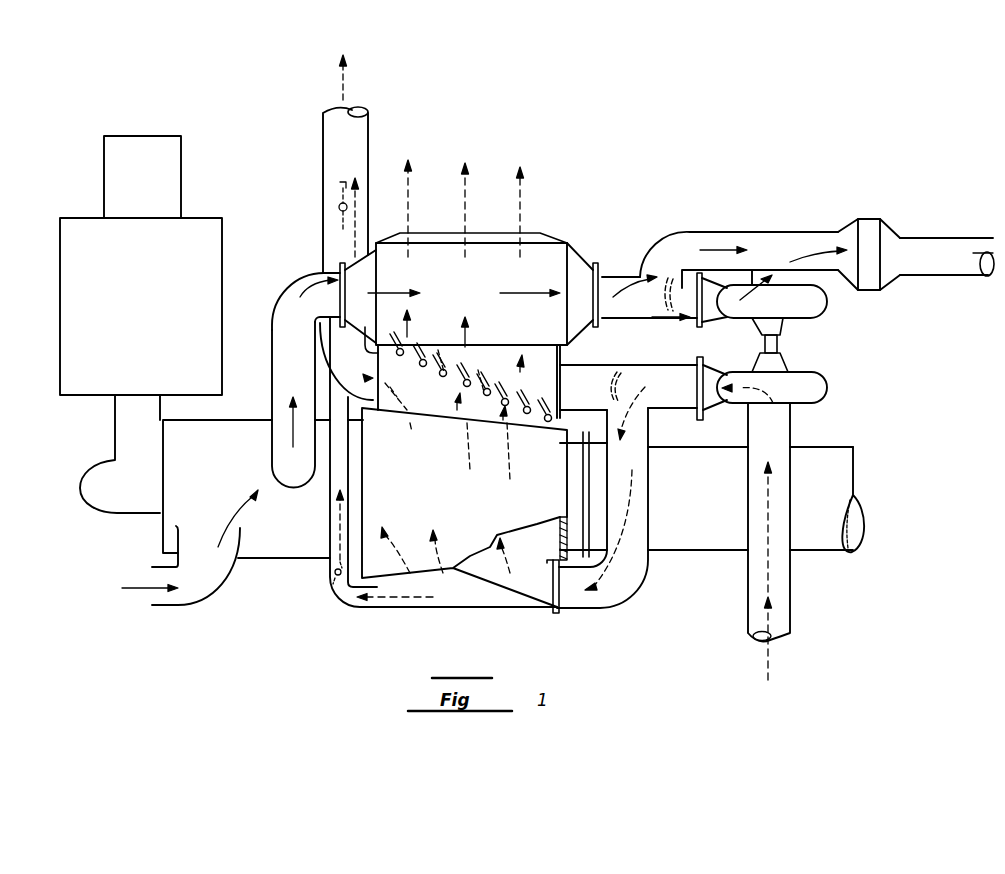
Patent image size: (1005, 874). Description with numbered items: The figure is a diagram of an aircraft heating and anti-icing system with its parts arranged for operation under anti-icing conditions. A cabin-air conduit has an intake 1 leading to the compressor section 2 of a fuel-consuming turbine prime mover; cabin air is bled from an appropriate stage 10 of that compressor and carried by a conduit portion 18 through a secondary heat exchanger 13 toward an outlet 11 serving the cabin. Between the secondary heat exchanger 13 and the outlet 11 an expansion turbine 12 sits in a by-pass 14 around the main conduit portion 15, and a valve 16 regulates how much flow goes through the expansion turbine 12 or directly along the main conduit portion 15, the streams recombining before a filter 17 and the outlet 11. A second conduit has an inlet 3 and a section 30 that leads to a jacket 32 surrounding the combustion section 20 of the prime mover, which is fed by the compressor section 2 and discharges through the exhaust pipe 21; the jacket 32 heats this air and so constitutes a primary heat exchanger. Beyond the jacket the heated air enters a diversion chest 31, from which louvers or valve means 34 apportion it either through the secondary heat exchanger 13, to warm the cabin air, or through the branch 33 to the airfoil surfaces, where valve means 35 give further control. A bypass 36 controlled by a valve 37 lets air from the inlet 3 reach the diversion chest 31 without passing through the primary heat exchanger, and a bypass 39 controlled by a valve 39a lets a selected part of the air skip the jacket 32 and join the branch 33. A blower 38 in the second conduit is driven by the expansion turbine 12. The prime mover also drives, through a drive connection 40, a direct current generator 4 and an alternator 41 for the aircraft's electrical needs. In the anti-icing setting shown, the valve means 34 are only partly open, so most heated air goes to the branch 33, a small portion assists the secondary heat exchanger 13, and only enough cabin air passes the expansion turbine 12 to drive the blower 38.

The intake 1 is at (152, 597).
The compressor section 2 is at (288, 552).
The inlet 3 is at (792, 612).
The direct current generator 4 is at (66, 360).
The bleed stage 10 is at (273, 453).
The outlet 11 is at (930, 240).
The expansion turbine 12 is at (823, 306).
The secondary heat exchanger 13 is at (481, 233).
The by-pass 14 is at (704, 318).
The main conduit portion 15 is at (690, 228).
The valve 16 is at (656, 270).
The filter 17 is at (868, 220).
The conduit portion 18 is at (275, 332).
The combustion section 20 is at (487, 553).
The exhaust pipe 21 is at (862, 540).
The section 30 is at (627, 595).
The diversion chest 31 is at (436, 408).
The jacket 32 is at (573, 560).
The branch 33 is at (327, 146).
The valve means 34 is at (477, 383).
The valve means 35 is at (338, 204).
The bypass 36 is at (586, 400).
The valve 37 is at (616, 371).
The blower 38 is at (822, 392).
The bypass 39 is at (354, 608).
The valve 39a is at (335, 577).
The drive connection 40 is at (90, 497).
The alternator 41 is at (132, 148).